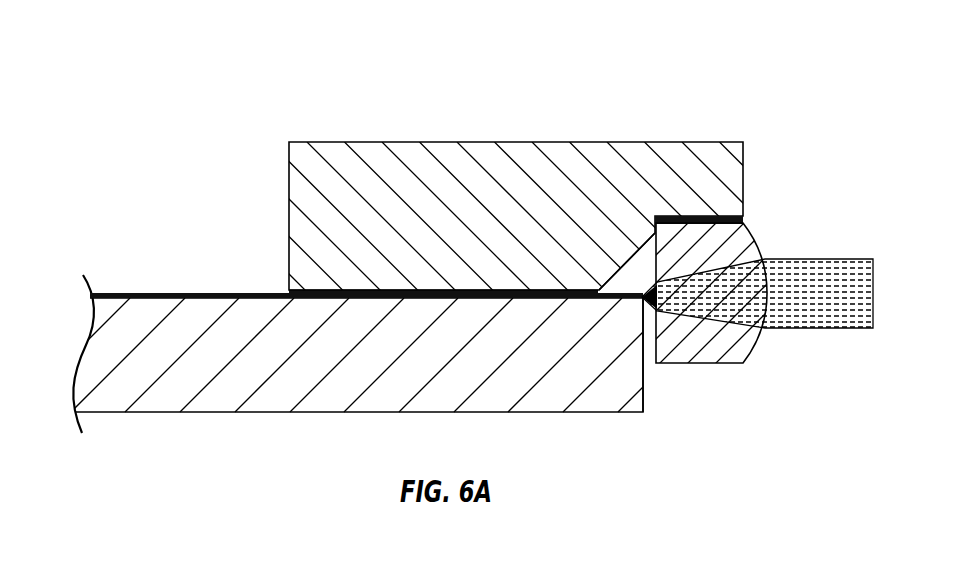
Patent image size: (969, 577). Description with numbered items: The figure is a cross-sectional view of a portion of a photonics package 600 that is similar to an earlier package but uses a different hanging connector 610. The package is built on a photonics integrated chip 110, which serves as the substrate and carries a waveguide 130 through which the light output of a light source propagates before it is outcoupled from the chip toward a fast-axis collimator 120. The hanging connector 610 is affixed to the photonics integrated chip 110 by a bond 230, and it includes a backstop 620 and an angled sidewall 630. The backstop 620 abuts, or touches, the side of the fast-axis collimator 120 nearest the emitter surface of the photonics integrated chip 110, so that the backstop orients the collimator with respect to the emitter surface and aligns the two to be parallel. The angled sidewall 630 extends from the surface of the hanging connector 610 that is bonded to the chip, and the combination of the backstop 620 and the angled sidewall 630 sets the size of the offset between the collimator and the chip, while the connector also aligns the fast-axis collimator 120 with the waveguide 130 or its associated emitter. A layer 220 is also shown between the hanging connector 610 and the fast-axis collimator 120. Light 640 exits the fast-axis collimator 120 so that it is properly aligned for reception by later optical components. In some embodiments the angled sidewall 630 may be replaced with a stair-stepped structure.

The photonics package 600 is at (210, 95).
The photonics integrated chip 110 is at (86, 350).
The waveguide 130 is at (88, 297).
The bond 230 is at (315, 290).
The hanging connector 610 is at (487, 141).
The backstop 620 is at (655, 232).
The adhesive layer 220 is at (730, 216).
The fast-axis collimator 120 is at (705, 365).
The light 640 is at (831, 259).
The angled sidewall 630 is at (618, 252).